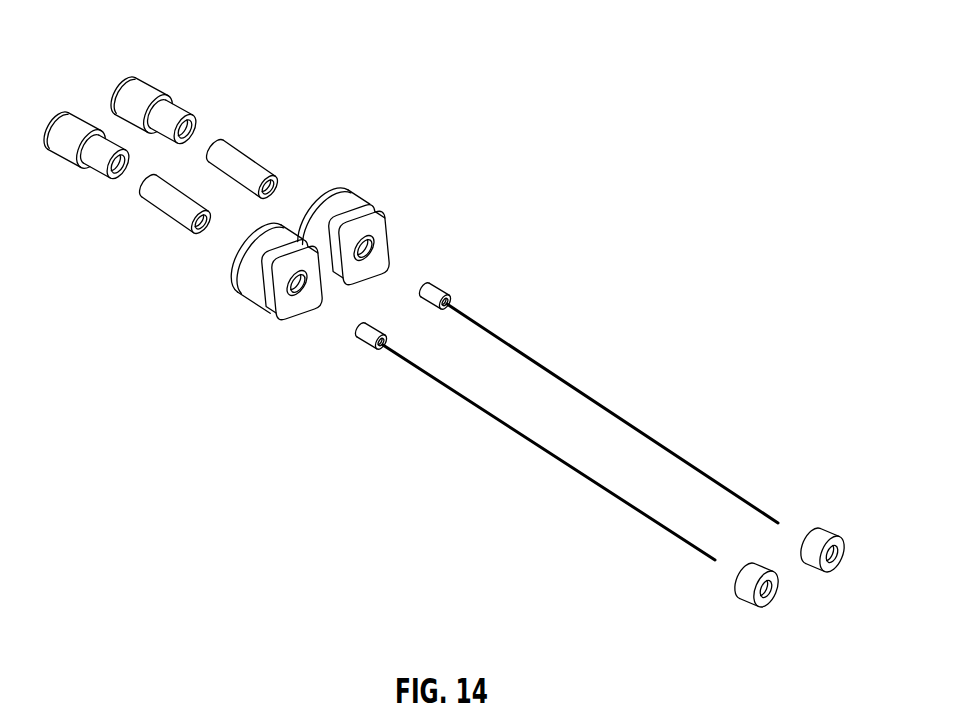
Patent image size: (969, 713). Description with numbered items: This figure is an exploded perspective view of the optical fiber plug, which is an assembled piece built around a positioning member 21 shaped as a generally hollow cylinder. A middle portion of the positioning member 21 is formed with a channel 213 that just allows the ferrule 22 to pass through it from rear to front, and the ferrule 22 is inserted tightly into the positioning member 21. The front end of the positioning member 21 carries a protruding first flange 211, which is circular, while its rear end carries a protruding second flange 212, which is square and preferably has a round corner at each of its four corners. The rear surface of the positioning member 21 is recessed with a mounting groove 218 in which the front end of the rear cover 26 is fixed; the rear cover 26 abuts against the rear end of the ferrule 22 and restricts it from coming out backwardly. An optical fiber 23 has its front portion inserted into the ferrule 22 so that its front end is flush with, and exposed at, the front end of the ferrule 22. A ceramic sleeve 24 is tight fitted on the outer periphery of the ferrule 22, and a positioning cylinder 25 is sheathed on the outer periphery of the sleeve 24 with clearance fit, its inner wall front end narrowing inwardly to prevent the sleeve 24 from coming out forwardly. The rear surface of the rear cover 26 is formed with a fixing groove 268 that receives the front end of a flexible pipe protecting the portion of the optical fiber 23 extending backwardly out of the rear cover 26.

The positioning member 21 is at (399, 257).
The first flange 211 is at (335, 190).
The second flange 212 is at (378, 212).
The channel 213 is at (372, 250).
The mounting groove 218 is at (299, 303).
The ferrule 22 is at (446, 290).
The optical fiber 23 is at (643, 427).
The sleeve 24 is at (234, 153).
The positioning cylinder 25 is at (142, 86).
The rear cover 26 is at (798, 553).
The fixing groove 268 is at (831, 563).